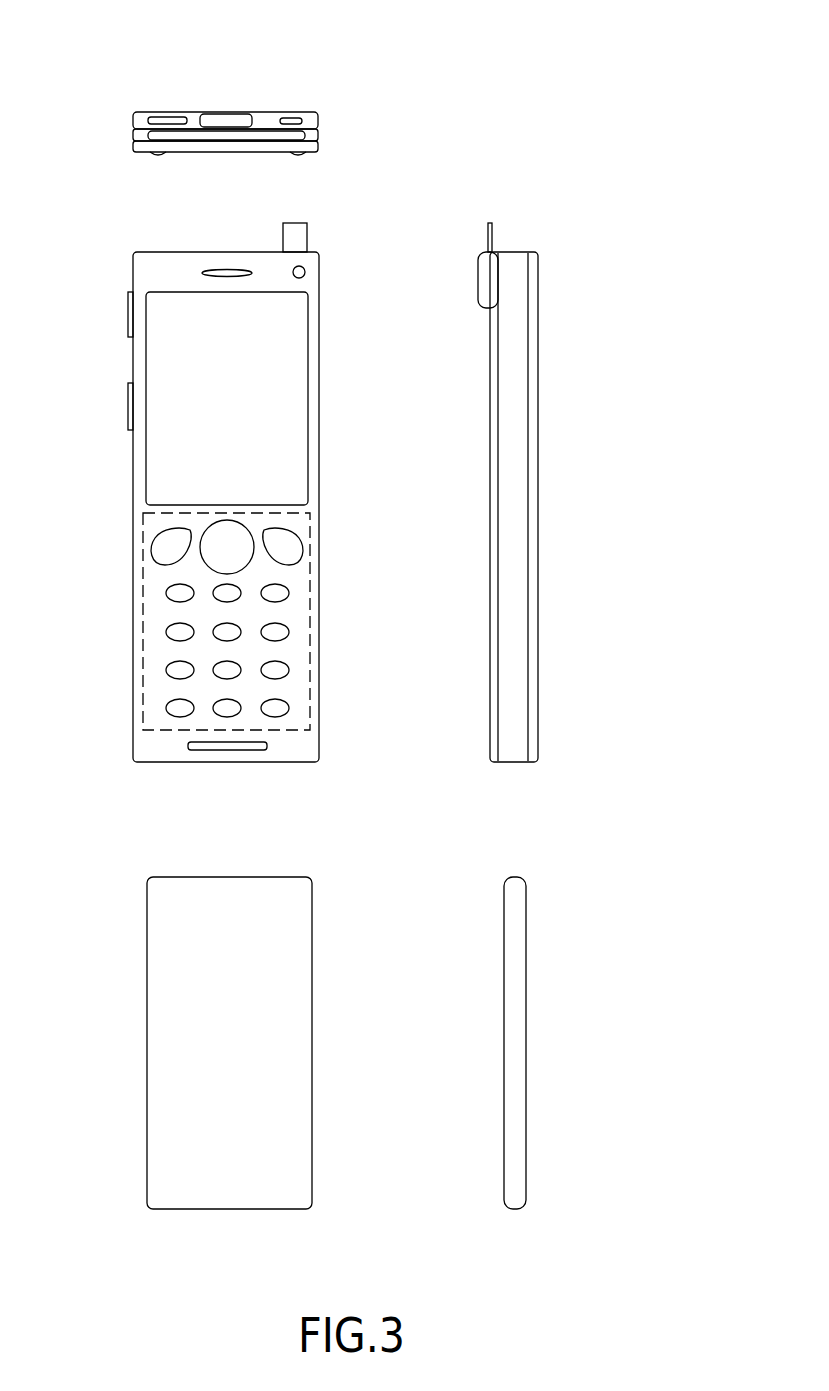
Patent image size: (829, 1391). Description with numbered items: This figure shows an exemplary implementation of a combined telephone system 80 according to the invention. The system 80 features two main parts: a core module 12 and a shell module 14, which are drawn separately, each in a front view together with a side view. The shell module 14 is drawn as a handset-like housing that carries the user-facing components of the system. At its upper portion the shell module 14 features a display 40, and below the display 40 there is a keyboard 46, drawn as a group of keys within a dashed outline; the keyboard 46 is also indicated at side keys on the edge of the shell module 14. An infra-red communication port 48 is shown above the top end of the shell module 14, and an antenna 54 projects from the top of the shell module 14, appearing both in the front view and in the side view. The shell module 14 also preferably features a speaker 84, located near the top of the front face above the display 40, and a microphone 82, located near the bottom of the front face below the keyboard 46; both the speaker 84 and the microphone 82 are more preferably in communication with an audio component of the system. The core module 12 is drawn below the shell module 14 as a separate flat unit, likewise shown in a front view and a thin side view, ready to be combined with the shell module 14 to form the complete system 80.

The combined telephone system 80 is at (364, 77).
The infra-red communication port 48 is at (229, 251).
The speaker 84 is at (208, 276).
The antenna 54 is at (485, 233).
The keyboard 46 is at (128, 313).
The shell module 14 is at (488, 383).
The display 40 is at (280, 461).
The microphone 82 is at (213, 752).
The core module 12 is at (504, 945).